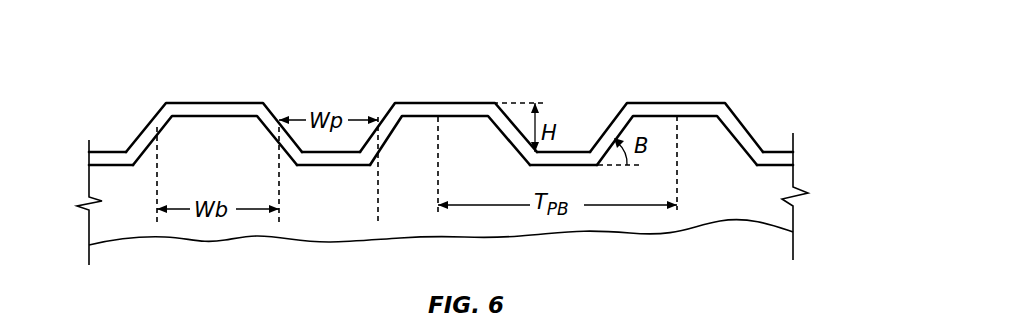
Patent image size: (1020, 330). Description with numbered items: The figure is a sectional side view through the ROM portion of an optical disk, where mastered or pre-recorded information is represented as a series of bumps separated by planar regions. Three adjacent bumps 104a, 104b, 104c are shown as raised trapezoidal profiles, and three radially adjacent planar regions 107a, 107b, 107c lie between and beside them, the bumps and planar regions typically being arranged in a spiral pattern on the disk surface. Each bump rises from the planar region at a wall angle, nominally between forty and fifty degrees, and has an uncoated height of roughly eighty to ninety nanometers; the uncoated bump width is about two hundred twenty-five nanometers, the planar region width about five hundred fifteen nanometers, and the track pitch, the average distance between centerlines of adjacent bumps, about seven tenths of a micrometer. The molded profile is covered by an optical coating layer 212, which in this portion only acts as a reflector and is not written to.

The optical coating layer 212 is at (117, 134).
The bump 104a is at (199, 86).
The bump 104b is at (433, 86).
The bump 104c is at (663, 81).
The planar region 107a is at (331, 98).
The planar region 107b is at (565, 91).
The planar region 107c is at (776, 131).